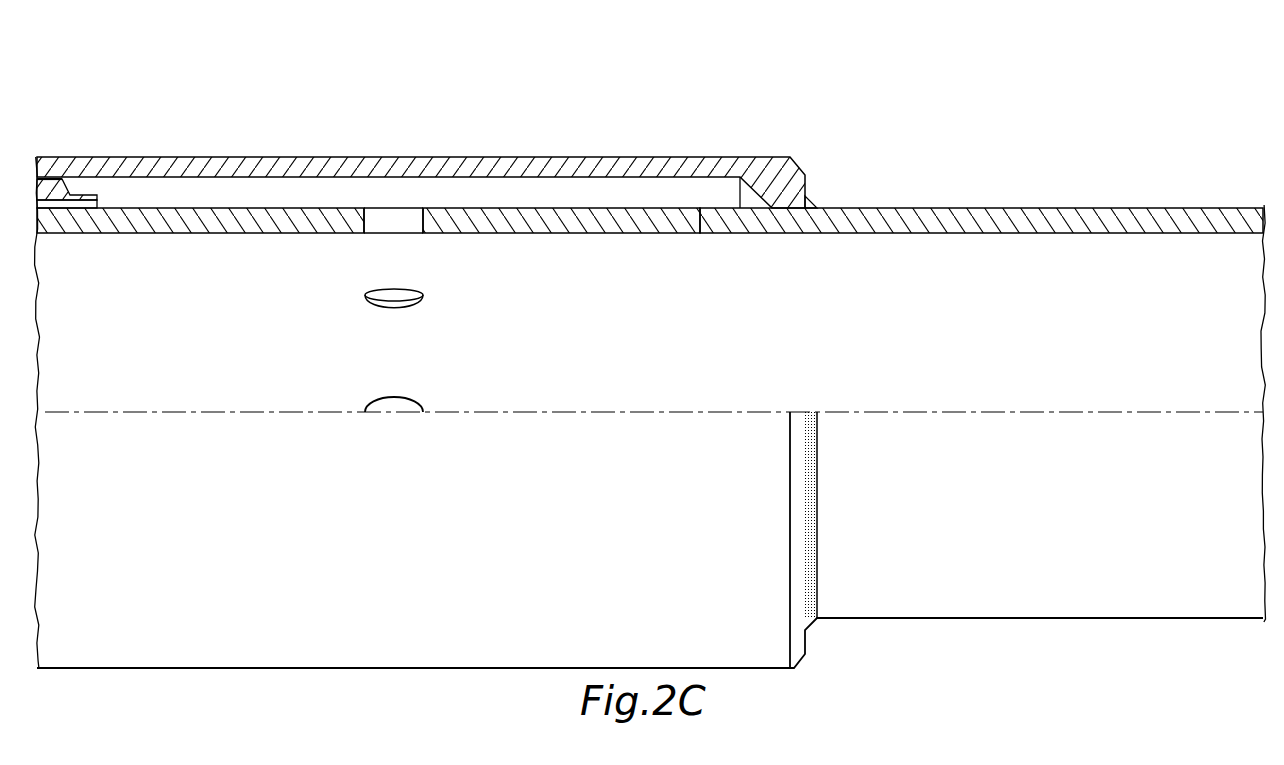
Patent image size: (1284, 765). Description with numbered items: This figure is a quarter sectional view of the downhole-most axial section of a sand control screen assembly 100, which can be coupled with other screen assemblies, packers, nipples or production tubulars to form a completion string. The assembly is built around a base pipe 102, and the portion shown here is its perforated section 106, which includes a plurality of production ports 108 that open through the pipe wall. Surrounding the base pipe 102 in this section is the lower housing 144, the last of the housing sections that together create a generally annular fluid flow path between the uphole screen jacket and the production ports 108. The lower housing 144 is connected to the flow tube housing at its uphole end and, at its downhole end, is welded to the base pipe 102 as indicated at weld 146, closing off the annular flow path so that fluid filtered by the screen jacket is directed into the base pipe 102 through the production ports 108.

The sand control screen assembly 100 is at (666, 97).
The base pipe 102 is at (598, 233).
The perforated section 106 is at (712, 233).
The production ports 108 is at (400, 228).
The lower housing 144 is at (425, 167).
The weld 146 is at (812, 208).